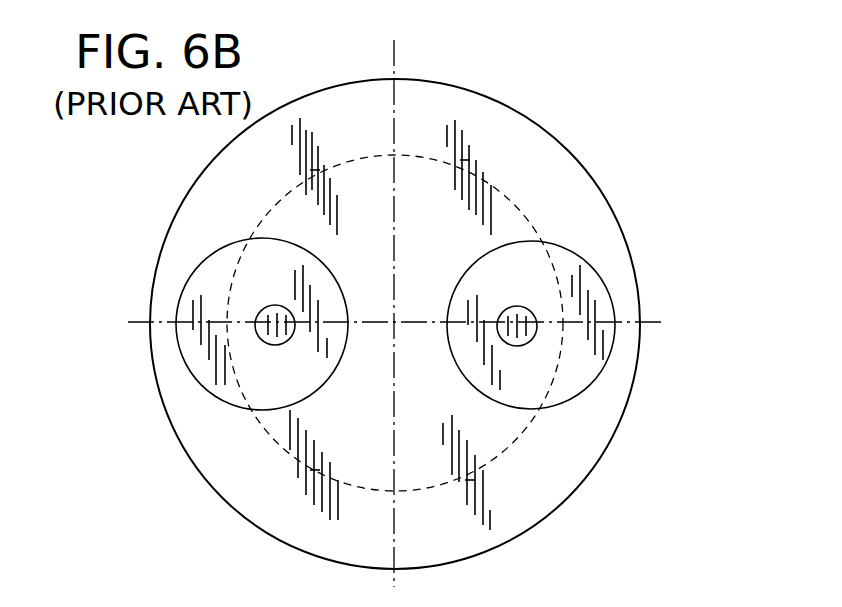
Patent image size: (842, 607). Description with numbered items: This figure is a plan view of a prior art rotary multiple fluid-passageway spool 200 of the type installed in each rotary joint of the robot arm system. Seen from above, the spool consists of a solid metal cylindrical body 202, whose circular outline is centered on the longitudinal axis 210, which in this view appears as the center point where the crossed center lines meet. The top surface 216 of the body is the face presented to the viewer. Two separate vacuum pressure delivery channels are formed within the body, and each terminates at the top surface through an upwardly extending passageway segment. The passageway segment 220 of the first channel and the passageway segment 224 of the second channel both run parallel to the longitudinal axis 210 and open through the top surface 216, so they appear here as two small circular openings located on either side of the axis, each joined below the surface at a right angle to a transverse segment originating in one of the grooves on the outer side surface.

The rotary multiple fluid-passageway spool 200 is at (118, 410).
The solid metal cylindrical body 202 is at (530, 530).
The longitudinal axis 210 is at (394, 58).
The top surface 216 is at (268, 517).
The passageway segment 220 is at (267, 304).
The passageway segment 224 is at (525, 306).